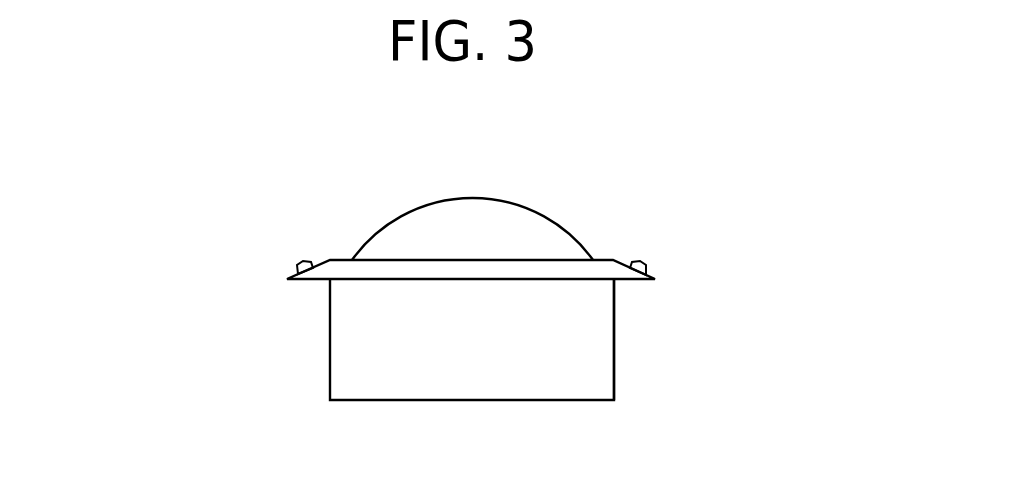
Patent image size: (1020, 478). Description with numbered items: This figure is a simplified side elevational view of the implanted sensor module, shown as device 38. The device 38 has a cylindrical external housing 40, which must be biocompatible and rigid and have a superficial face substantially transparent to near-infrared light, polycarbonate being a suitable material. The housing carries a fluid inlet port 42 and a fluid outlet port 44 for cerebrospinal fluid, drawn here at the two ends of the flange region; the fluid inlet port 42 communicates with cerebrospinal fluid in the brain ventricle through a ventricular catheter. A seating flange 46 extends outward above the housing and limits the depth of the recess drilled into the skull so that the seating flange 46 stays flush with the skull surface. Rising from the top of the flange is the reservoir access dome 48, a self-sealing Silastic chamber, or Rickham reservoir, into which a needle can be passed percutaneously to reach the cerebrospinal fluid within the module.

The device 38 is at (630, 351).
The external housing 40 is at (310, 355).
The fluid inlet port 42 is at (286, 255).
The fluid outlet port 44 is at (651, 243).
The seating flange 46 is at (292, 296).
The reservoir access dome 48 is at (565, 199).